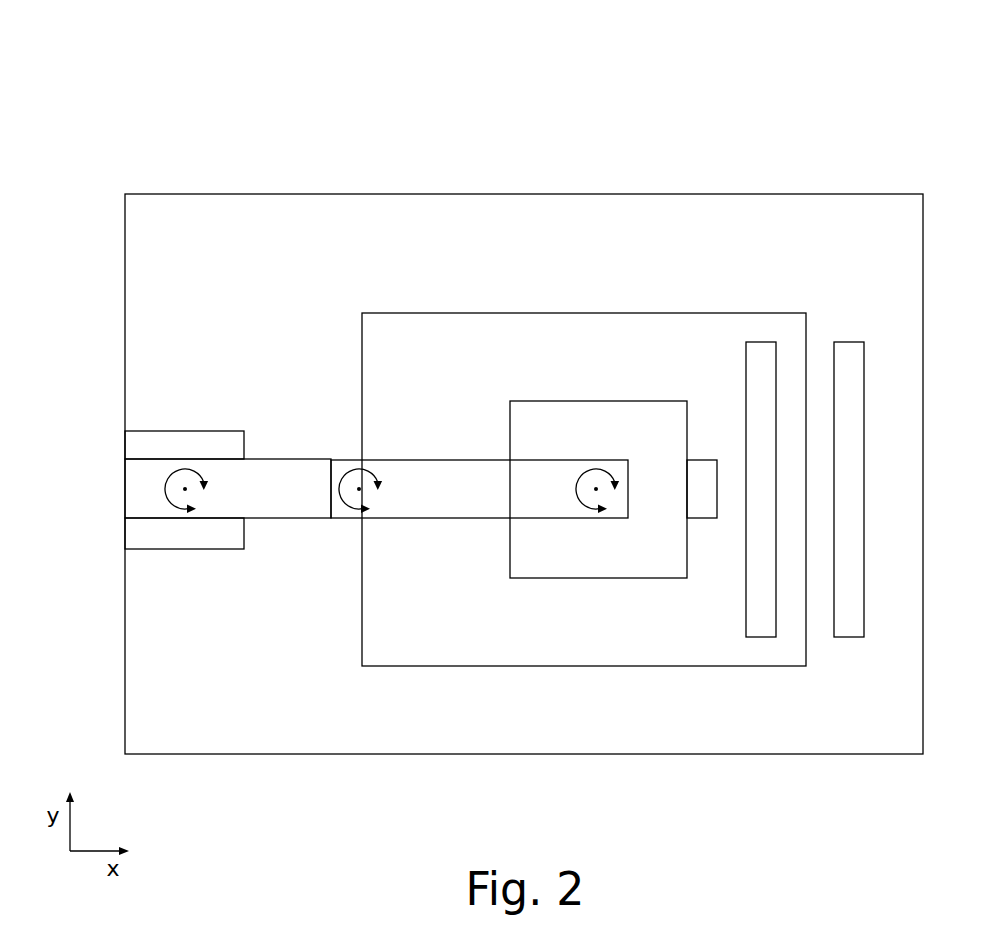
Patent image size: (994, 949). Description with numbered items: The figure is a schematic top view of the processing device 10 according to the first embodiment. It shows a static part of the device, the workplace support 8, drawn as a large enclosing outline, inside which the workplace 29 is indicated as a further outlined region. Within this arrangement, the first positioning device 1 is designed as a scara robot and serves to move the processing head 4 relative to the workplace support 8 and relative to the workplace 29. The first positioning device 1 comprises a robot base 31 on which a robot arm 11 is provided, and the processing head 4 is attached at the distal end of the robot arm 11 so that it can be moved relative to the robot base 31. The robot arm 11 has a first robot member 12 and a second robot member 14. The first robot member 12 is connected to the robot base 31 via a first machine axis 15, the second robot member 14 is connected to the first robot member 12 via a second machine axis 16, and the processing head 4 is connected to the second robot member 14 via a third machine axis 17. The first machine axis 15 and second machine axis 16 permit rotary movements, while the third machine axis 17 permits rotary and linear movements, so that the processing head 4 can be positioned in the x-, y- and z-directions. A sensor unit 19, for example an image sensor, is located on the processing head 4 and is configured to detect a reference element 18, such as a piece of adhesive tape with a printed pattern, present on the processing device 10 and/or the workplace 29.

The processing device 10 is at (801, 99).
The workplace support 8 is at (140, 240).
The workplace 29 is at (460, 325).
The reference element 18 is at (758, 352).
The processing head 4 is at (581, 415).
The sensor unit 19 is at (703, 520).
The first positioning device 1 is at (100, 492).
The robot arm 11 is at (287, 545).
The robot base 31 is at (180, 438).
The first robot member 12 is at (276, 468).
The second robot member 14 is at (456, 470).
The first machine axis 15 is at (187, 513).
The second machine axis 16 is at (360, 490).
The third machine axis 17 is at (598, 487).